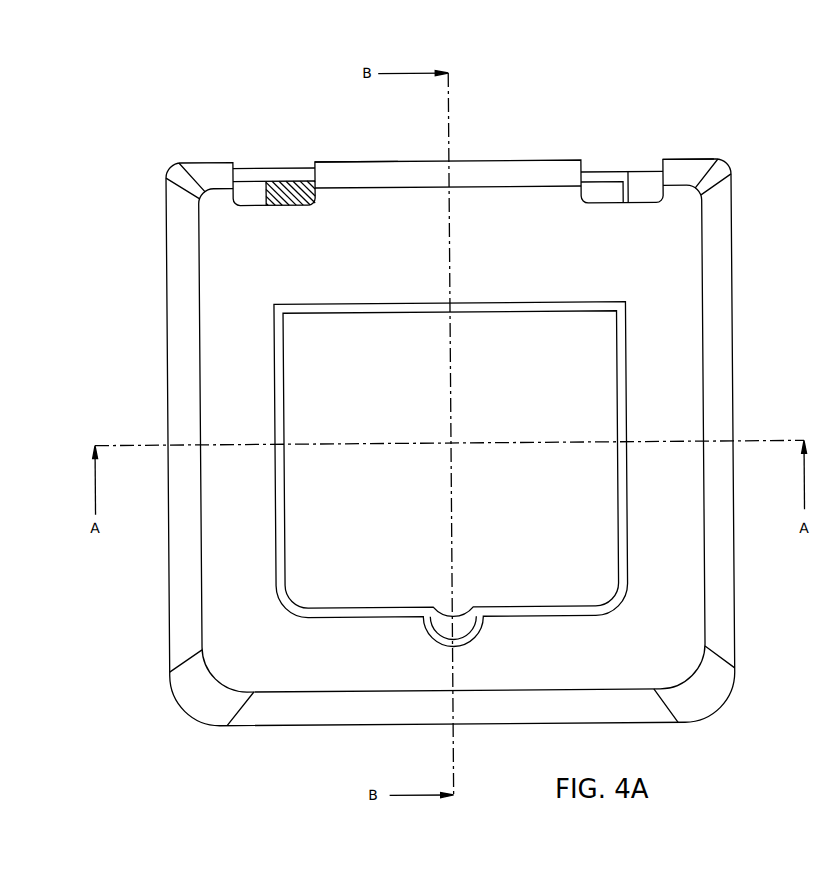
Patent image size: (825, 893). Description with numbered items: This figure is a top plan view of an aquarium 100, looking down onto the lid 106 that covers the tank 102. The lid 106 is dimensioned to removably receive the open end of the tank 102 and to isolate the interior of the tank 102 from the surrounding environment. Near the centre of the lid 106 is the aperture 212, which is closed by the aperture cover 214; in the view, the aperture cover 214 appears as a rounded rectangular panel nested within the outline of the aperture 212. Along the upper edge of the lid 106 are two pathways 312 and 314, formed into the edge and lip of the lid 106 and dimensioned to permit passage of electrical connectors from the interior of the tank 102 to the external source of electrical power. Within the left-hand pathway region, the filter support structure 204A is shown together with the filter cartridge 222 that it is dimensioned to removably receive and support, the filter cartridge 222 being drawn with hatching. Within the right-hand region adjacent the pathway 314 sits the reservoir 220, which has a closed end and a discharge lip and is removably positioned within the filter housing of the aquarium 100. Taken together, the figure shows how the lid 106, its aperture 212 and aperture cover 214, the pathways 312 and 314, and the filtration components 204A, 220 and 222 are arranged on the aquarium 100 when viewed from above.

The aquarium 100 is at (743, 84).
The tank 102 is at (609, 169).
The lid 106 is at (691, 324).
The filter support structure 204A is at (270, 194).
The aperture 212 is at (578, 620).
The aperture cover 214 is at (599, 546).
The reservoir 220 is at (615, 193).
The filter cartridge 222 is at (292, 191).
The pathway 312 is at (310, 157).
The pathway 314 is at (659, 157).